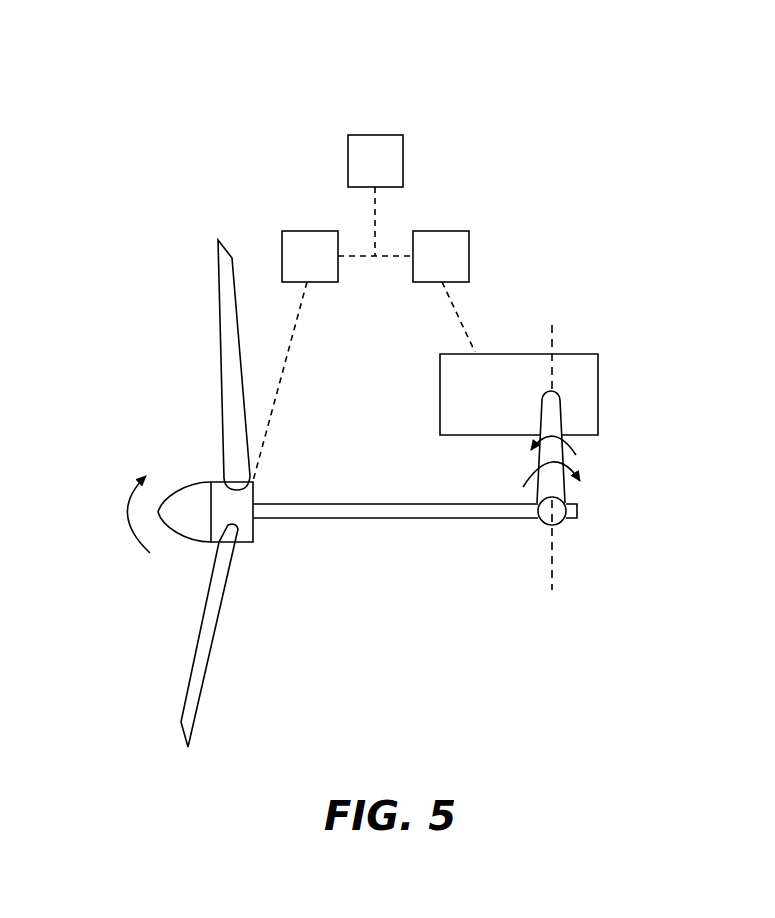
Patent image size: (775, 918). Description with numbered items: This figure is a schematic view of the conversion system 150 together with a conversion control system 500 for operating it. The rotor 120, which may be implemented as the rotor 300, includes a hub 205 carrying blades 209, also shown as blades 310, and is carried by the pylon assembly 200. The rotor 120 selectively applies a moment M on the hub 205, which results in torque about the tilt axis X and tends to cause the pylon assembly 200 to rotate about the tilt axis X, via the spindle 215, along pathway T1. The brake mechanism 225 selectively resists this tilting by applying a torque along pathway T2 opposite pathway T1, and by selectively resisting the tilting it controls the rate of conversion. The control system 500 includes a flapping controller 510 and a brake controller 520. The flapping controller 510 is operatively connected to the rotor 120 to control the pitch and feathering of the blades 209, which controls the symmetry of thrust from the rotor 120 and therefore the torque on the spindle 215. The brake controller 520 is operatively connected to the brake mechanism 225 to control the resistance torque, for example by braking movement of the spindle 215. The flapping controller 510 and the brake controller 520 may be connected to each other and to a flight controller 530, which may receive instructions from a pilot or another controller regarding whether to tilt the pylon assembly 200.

The conversion control system 500 is at (257, 124).
The flapping controller 510 is at (298, 231).
The brake controller 520 is at (452, 231).
The flight controller 530 is at (389, 135).
The conversion system 150 is at (560, 260).
The brake mechanism 225 is at (598, 390).
The spindle 215 is at (555, 487).
The pylon assembly 200 is at (436, 559).
The hub 205 is at (253, 530).
The rotor 120 is at (186, 365).
The rotor 300 is at (234, 365).
The blades 209 is at (141, 635).
The blades 310 is at (202, 623).
The moment M is at (127, 505).
The pathway T1 is at (528, 465).
The pathway T2 is at (572, 450).
The tilt axis X is at (552, 563).